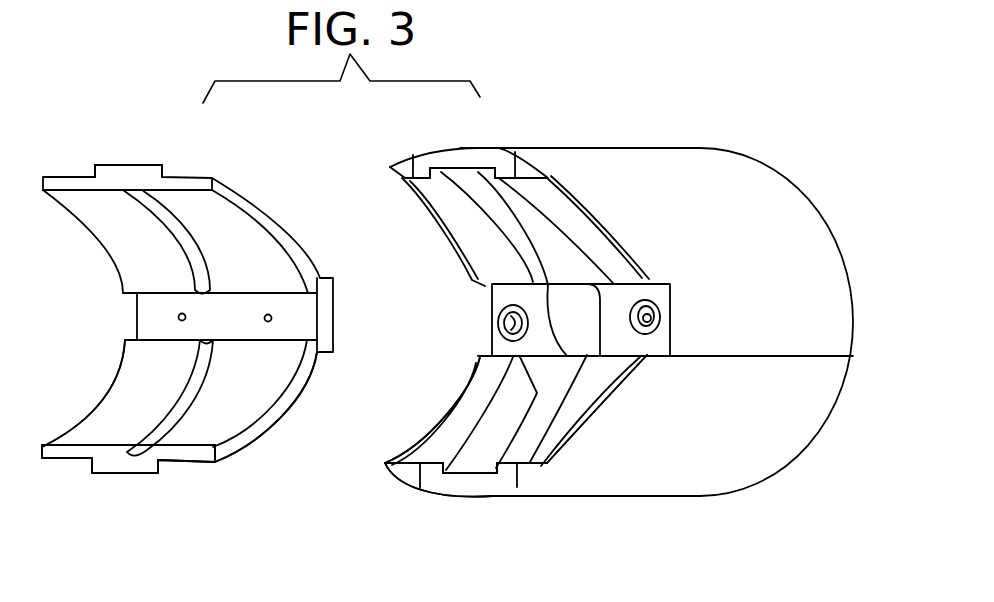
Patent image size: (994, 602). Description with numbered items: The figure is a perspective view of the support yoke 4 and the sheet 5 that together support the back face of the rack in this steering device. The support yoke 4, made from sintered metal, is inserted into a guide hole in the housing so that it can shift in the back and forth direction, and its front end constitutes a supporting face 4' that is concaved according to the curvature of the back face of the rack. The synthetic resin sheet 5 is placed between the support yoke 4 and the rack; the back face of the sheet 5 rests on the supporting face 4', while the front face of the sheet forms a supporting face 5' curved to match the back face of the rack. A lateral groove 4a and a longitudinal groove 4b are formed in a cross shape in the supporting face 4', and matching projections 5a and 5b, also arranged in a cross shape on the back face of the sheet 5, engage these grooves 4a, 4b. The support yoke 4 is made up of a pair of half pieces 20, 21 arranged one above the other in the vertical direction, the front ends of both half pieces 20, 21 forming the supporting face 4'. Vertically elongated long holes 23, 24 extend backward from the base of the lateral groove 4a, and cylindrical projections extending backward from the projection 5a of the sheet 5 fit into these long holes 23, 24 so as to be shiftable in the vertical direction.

The support yoke 4 is at (532, 286).
The lateral groove 4a is at (493, 292).
The longitudinal groove 4b is at (470, 176).
The supporting face 4' is at (516, 462).
The sheet 5 is at (181, 291).
The projection 5a is at (338, 335).
The projection 5b is at (132, 172).
The supporting face 5' is at (179, 427).
The half piece 20 is at (735, 180).
The half piece 21 is at (658, 485).
The long hole 23 is at (658, 324).
The long hole 24 is at (505, 330).